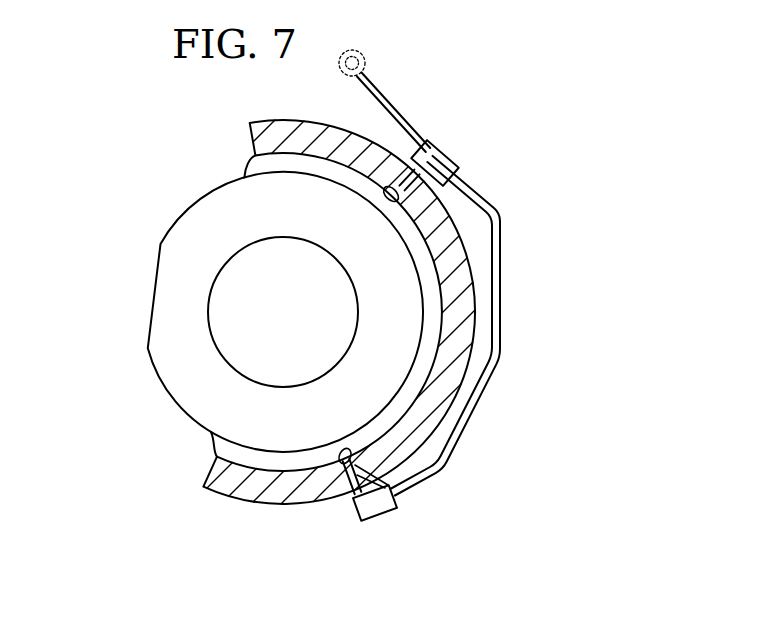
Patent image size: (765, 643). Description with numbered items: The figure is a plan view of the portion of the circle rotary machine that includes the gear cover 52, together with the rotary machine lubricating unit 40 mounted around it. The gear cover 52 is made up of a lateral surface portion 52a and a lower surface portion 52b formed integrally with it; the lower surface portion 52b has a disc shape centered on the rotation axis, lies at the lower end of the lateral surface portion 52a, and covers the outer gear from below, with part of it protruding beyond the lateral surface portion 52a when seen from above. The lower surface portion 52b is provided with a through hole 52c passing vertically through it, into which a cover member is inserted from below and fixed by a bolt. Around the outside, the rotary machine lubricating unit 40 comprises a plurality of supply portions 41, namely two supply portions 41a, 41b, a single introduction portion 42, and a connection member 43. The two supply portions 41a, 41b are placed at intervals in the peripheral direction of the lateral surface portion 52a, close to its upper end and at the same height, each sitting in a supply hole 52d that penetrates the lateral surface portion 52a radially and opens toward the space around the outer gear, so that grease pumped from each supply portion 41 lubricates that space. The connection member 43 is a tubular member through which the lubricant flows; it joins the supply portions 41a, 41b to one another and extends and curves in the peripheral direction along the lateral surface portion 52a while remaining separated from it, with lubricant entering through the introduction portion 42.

The rotary machine lubricating unit 40 is at (495, 300).
The supply portion 41 is at (473, 334).
The supply portion 41a is at (443, 165).
The supply portion 41b is at (380, 512).
The introduction portion 42 is at (397, 112).
The connection member 43 is at (498, 329).
The gear cover 52 is at (323, 369).
The lateral surface portion 52a is at (232, 486).
The lower surface portion 52b is at (210, 400).
The through hole 52c is at (212, 298).
The supply hole 52d is at (396, 196).